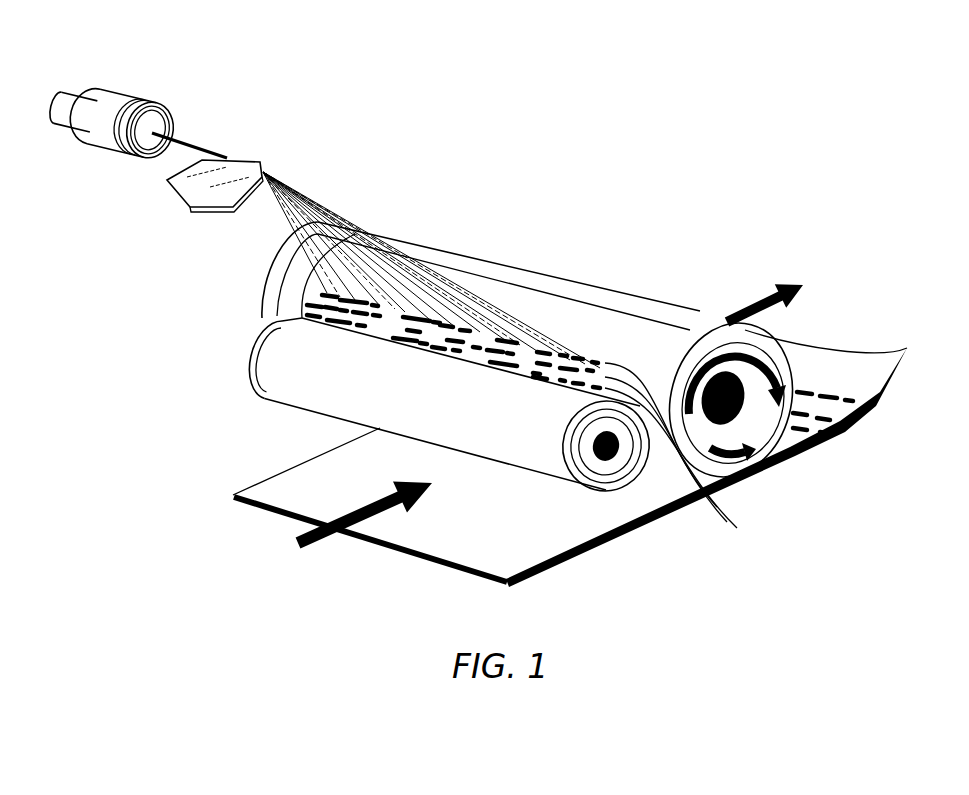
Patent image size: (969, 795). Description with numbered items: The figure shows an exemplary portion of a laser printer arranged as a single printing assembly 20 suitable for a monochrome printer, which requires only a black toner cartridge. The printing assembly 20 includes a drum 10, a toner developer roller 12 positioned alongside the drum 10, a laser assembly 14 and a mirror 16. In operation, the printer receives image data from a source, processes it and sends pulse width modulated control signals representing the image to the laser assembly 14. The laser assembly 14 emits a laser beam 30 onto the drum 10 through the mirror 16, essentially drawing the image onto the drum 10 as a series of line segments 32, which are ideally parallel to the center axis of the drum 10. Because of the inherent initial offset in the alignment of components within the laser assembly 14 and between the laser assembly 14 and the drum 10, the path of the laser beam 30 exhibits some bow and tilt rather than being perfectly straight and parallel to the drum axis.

The drum 10 is at (787, 355).
The toner developer roller 12 is at (250, 357).
The laser assembly 14 is at (120, 92).
The mirror 16 is at (208, 210).
The printing assembly 20 is at (429, 121).
The laser beam 30 is at (312, 197).
The line segments 32 is at (688, 454).